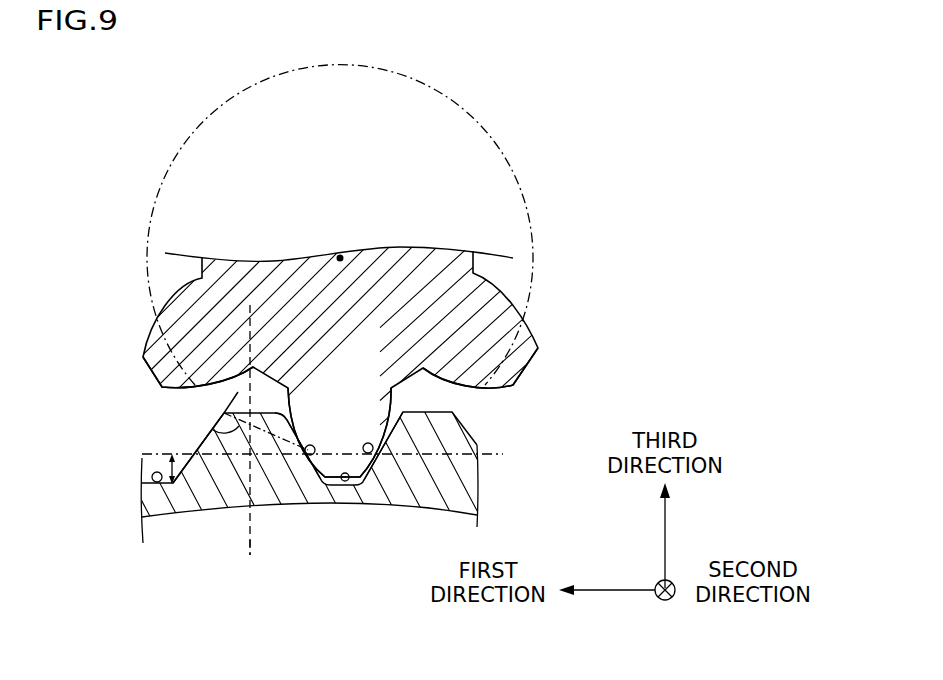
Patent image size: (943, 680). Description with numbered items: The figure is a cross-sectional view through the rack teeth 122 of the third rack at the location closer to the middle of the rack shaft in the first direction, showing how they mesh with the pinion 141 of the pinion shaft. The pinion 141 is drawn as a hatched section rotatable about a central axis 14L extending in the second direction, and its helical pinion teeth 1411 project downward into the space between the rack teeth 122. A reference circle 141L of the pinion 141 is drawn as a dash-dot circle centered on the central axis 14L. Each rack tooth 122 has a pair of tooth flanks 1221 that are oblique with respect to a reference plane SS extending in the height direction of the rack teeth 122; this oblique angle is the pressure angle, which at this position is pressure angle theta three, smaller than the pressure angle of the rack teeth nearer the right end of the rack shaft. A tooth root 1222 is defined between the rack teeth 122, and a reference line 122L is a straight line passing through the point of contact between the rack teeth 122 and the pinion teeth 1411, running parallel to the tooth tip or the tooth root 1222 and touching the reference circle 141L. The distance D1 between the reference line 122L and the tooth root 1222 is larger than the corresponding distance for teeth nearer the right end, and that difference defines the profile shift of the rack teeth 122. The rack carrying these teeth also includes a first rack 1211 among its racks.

The pinion 141 is at (292, 253).
The central axis 14L is at (341, 256).
The reference circle 141L is at (535, 222).
The pinion teeth 1411 is at (160, 335).
The rack teeth 122 is at (447, 438).
The tooth flanks 1221 is at (205, 447).
The tooth root 1222 is at (158, 483).
The first rack 1211 is at (481, 477).
The distance D1 is at (167, 464).
The reference line 122L is at (275, 430).
The reference plane SS is at (253, 557).